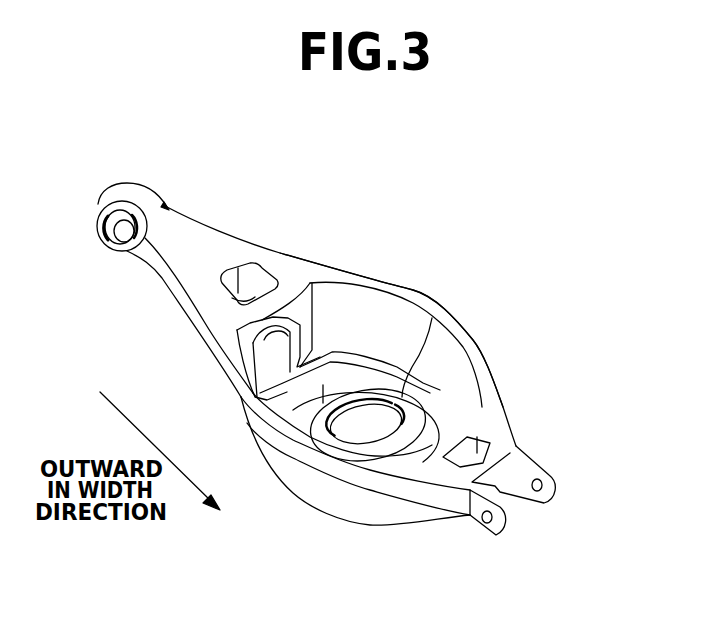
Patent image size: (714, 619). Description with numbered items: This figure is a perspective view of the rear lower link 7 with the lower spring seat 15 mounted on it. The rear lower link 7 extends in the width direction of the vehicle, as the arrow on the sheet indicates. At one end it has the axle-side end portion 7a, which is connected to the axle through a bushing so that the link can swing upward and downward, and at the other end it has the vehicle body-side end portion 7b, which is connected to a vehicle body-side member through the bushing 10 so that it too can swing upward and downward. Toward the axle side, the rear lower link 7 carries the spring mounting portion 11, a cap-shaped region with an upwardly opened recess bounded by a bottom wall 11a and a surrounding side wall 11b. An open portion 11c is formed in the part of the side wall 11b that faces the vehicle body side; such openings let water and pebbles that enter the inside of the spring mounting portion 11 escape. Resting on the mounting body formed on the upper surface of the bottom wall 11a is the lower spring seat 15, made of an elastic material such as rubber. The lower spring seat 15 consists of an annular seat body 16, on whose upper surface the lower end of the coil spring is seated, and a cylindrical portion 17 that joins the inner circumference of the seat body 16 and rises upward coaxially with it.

The rear lower link 7 is at (517, 284).
The axle-side end portion 7a is at (552, 474).
The vehicle body-side end portion 7b is at (130, 193).
The bushing 10 is at (122, 242).
The spring mounting portion 11 is at (320, 277).
The bottom wall 11a is at (343, 377).
The side wall 11b is at (402, 320).
The open portion 11c is at (292, 322).
The lower spring seat 15 is at (436, 390).
The seat body 16 is at (430, 418).
The cylindrical portion 17 is at (448, 338).